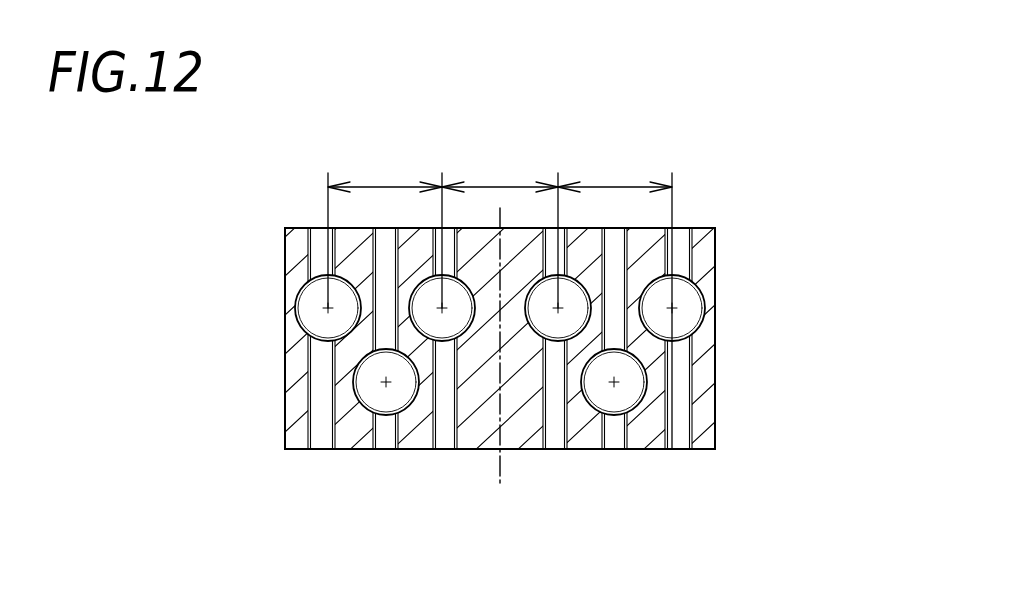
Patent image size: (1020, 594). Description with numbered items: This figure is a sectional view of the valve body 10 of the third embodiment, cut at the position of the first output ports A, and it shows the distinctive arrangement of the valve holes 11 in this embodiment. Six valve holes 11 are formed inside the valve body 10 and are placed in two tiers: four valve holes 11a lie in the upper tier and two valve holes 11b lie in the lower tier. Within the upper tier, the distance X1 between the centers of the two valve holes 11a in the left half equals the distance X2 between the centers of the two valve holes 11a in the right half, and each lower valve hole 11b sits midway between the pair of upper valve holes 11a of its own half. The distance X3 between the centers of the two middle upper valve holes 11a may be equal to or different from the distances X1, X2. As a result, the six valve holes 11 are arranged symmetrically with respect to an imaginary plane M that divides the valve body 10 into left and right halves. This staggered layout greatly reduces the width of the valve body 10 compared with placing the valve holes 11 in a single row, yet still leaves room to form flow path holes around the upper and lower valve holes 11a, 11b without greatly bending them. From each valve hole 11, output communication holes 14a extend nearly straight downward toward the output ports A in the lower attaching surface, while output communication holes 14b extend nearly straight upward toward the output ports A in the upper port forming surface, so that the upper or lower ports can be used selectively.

The valve body 10 is at (710, 343).
The valve hole 11 is at (515, 349).
The upper tier valve hole 11a is at (313, 296).
The lower tier valve hole 11b is at (365, 382).
The output communication hole 14a is at (310, 360).
The output communication hole 14b is at (318, 237).
The first output port A is at (312, 443).
The imaginary plane M is at (501, 366).
The distance between centers of left-half upper valve holes X1 is at (385, 229).
The distance between centers of right-half upper valve holes X2 is at (615, 299).
The distance between centers of middle upper valve holes X3 is at (500, 229).